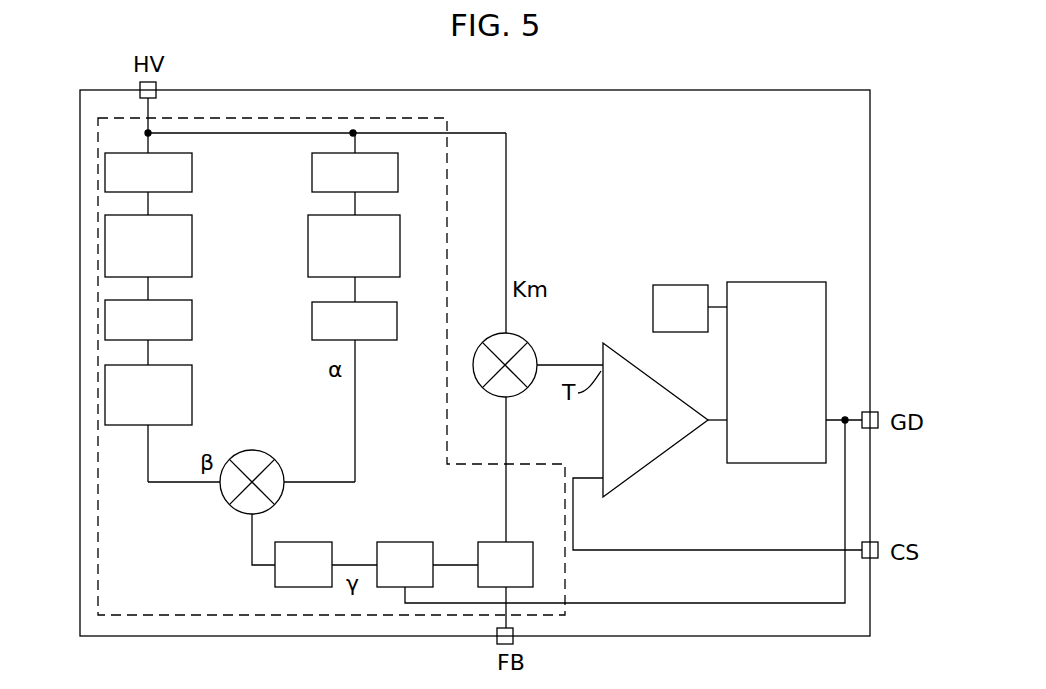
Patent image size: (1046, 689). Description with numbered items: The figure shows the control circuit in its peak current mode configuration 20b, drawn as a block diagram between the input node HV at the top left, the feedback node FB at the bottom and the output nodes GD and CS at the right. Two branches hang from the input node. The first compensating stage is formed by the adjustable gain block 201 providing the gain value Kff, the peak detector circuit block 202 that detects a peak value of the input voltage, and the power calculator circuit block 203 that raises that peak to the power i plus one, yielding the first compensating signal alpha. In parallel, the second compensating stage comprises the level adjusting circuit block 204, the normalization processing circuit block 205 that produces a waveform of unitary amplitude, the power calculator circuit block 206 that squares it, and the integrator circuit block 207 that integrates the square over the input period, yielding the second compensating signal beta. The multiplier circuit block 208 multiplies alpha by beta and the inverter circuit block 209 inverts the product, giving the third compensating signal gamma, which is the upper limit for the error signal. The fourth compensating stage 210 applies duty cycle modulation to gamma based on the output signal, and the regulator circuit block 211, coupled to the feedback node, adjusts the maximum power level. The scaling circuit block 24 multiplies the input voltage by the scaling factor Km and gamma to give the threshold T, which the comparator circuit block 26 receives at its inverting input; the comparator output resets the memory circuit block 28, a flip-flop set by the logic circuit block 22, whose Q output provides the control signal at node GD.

The PCM configuration 20b is at (777, 118).
The adjustable gain block 201 is at (312, 160).
The peak detector circuit block 202 is at (318, 258).
The power calculator circuit block 203 is at (380, 336).
The level adjusting circuit block 204 is at (215, 168).
The normalization processing circuit block 205 is at (175, 243).
The power calculator circuit block 206 is at (183, 325).
The integrator circuit block 207 is at (175, 385).
The multiplier circuit block 208 is at (226, 491).
The inverter circuit block 209 is at (275, 577).
The fourth compensating stage 210 is at (405, 546).
The regulator circuit block 211 is at (490, 555).
The logic circuit block 22 is at (690, 295).
The scaling circuit block 24 is at (526, 353).
The comparator circuit block 26 is at (668, 443).
The memory circuit block 28 is at (787, 288).